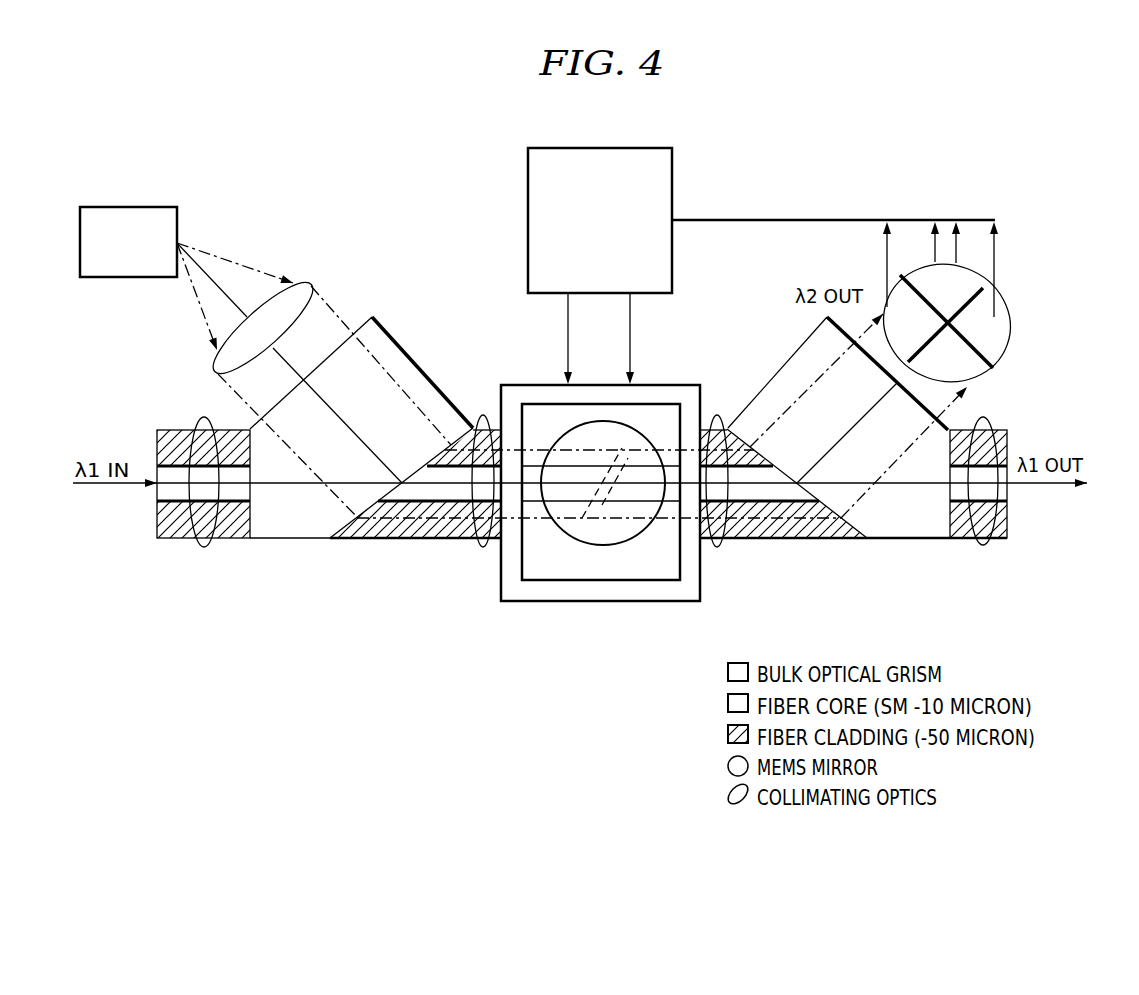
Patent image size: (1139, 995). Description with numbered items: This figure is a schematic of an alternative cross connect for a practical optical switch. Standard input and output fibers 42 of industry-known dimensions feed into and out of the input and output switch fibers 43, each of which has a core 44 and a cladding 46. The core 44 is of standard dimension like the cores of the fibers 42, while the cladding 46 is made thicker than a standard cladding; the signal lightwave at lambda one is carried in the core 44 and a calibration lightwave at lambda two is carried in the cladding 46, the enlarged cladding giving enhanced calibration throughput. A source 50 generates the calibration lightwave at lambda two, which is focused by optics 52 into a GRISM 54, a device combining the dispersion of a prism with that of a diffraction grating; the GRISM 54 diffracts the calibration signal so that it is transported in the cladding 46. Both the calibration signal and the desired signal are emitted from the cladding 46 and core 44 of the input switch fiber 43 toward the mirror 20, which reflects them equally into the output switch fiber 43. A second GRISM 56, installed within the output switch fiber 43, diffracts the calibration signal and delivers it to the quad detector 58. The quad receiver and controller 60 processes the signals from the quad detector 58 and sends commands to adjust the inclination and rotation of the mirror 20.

The mirror 20 is at (540, 555).
The input and output fiber 42 is at (204, 547).
The input and output switch fibers 43 is at (483, 415).
The core 44 is at (750, 513).
The cladding 46 is at (732, 552).
The source 50 is at (131, 207).
The optics 52 is at (314, 284).
The GRISM 54 is at (393, 340).
The GRISM 56 is at (834, 510).
The quad detector 58 is at (1010, 320).
The quad receiver and controller 60 is at (600, 148).